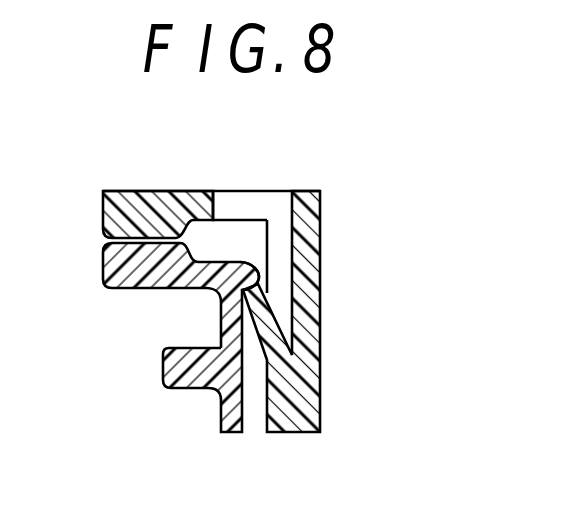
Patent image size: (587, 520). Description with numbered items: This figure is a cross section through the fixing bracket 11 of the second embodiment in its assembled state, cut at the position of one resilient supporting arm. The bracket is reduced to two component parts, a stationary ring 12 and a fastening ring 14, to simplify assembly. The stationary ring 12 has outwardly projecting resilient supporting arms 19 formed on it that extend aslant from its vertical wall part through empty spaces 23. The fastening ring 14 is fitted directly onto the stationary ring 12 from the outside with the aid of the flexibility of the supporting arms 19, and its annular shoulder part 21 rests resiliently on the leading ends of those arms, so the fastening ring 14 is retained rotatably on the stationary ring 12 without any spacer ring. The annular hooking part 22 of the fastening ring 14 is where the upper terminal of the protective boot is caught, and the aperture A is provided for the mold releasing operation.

The fixing bracket 11 is at (343, 200).
The stationary ring 12 is at (135, 212).
The fastening ring 14 is at (110, 276).
The resilient supporting arm 19 is at (276, 324).
The annular shoulder part 21 is at (247, 269).
The annular hooking part 22 is at (172, 366).
The empty space 23 is at (278, 282).
The aperture A is at (245, 204).